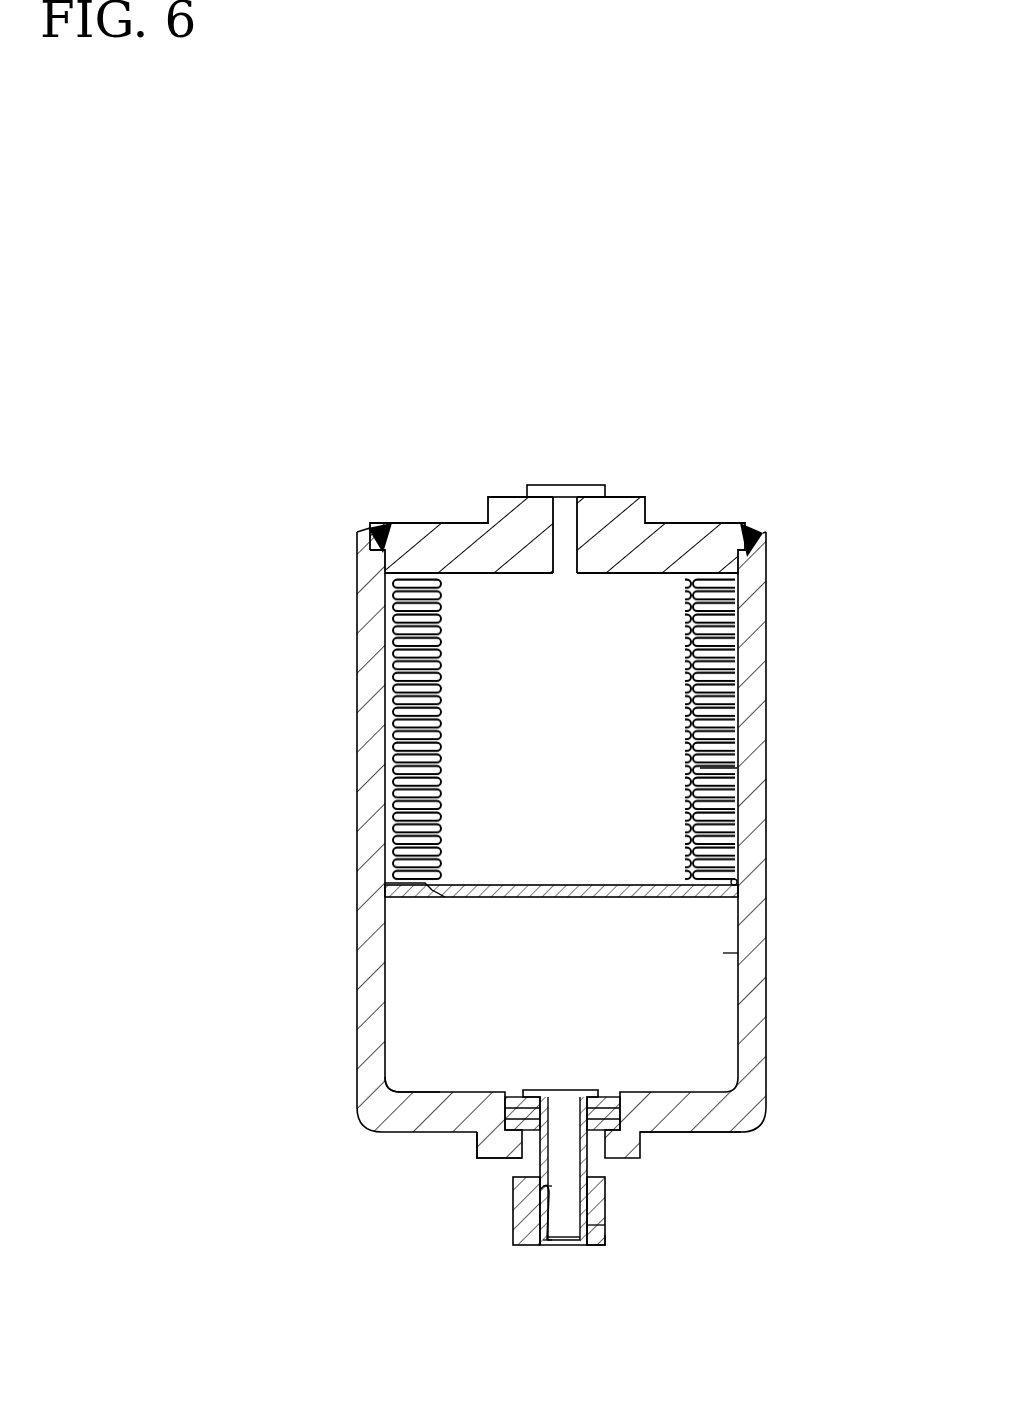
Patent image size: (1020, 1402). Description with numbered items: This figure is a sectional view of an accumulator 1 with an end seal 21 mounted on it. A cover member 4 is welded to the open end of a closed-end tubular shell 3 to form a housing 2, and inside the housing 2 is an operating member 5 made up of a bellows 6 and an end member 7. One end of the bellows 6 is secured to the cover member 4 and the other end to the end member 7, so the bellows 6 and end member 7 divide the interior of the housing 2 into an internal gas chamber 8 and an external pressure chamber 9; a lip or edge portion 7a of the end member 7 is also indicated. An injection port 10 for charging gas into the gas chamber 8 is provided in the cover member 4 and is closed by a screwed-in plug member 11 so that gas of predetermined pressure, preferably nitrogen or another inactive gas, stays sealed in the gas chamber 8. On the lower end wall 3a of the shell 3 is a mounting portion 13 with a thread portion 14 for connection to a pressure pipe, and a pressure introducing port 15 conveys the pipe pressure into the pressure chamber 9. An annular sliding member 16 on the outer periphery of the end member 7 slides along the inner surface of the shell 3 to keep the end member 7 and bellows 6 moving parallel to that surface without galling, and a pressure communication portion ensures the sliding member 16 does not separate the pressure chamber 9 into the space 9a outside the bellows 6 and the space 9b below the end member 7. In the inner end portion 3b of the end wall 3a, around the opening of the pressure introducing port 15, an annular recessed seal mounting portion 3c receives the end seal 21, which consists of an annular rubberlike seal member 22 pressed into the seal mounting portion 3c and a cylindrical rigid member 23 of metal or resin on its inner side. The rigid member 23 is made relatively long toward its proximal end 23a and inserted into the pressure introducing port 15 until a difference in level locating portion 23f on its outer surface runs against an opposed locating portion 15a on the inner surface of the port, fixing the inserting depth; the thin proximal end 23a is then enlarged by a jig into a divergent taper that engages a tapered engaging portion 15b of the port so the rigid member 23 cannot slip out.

The accumulator 1 is at (670, 492).
The housing 2 is at (776, 606).
The shell 3 is at (757, 688).
The end wall 3a is at (680, 1130).
The end portion 3b is at (440, 1120).
The seal mounting portion 3c is at (478, 1152).
The cover member 4 is at (710, 528).
The operating member 5 is at (395, 663).
The bellows 6 is at (393, 718).
The end member 7 is at (460, 895).
The plate lip 7a is at (490, 898).
The gas chamber 8 is at (573, 751).
The pressure chamber 9 is at (571, 971).
The space 9a is at (737, 768).
The space 9b is at (723, 953).
The injection port 10 is at (556, 508).
The plug member 11 is at (578, 500).
The mounting portion 13 is at (596, 1245).
The thread portion 14 is at (606, 1195).
The pressure introducing port 15 is at (556, 1246).
The difference in level locating portion 15a is at (545, 1190).
The divergent tapered engaging portion 15b is at (547, 1245).
The sliding member 16 is at (737, 883).
The end seal 21 is at (608, 1086).
The seal member 22 is at (600, 1097).
The rigid member 23 is at (592, 1160).
The proximal end 23a is at (572, 1248).
The difference in level locating portion 23f is at (600, 1232).